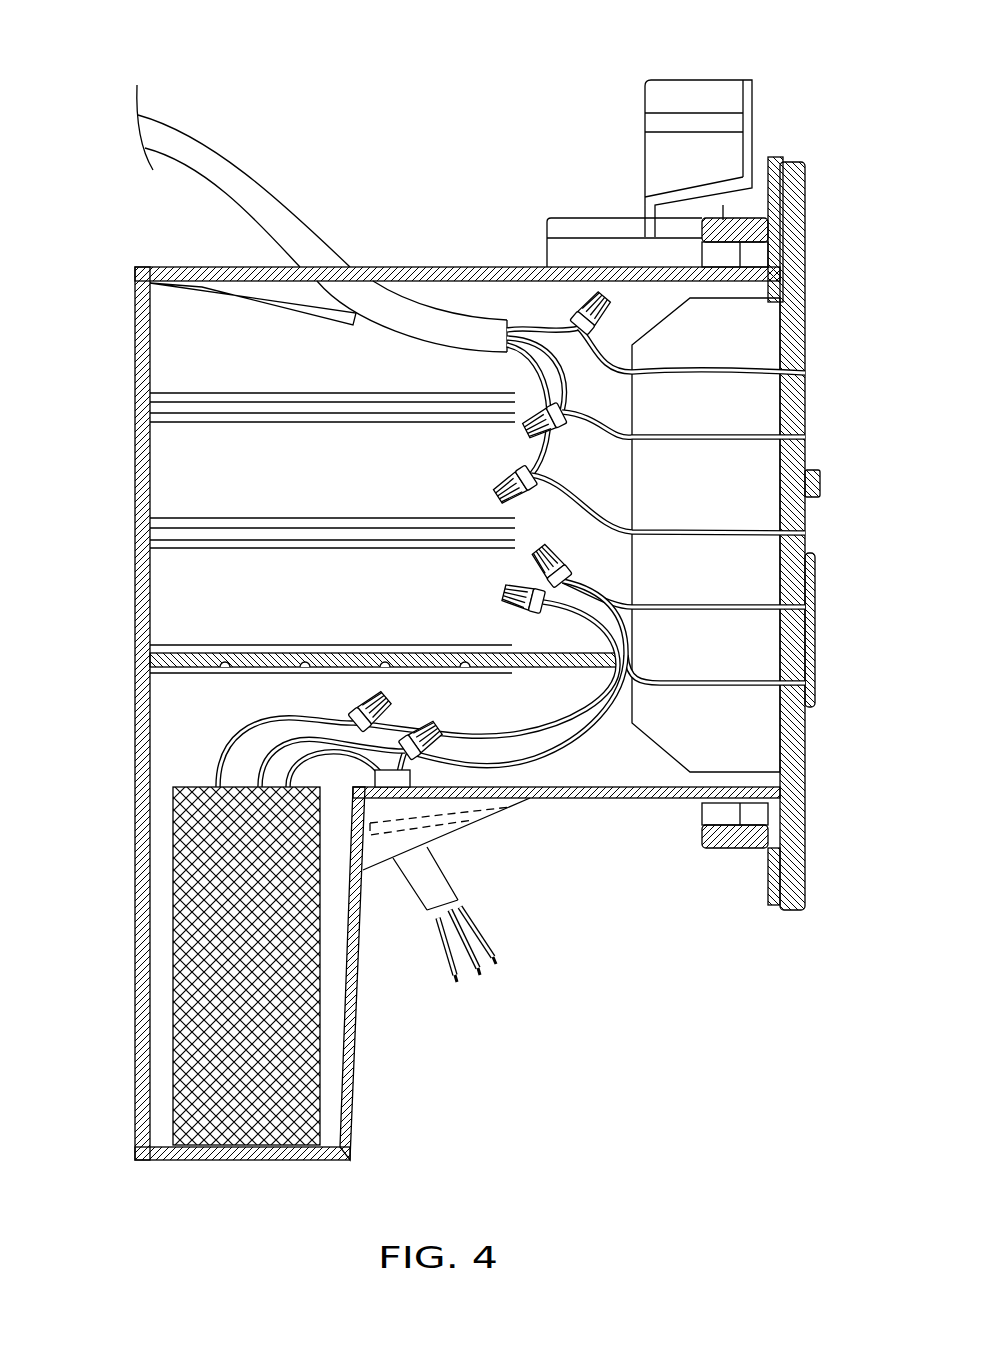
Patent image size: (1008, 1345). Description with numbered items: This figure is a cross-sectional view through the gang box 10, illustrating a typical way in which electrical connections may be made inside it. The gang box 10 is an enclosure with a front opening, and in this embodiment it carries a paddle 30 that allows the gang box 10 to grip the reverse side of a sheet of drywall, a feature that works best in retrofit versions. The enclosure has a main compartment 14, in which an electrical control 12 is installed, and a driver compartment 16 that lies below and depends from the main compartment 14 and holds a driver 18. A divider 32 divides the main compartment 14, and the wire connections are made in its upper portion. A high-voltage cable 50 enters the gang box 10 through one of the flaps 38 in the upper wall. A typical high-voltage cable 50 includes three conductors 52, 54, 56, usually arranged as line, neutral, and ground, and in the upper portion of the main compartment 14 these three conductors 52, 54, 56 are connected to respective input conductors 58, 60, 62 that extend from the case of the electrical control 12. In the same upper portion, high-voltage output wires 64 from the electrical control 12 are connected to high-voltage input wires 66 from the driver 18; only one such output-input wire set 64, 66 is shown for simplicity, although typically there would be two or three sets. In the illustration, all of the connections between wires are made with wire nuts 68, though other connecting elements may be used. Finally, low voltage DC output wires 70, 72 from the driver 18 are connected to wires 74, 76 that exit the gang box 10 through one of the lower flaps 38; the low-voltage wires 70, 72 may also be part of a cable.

The gang box 10 is at (450, 182).
The electrical control 12 is at (765, 342).
The main compartment 14 is at (178, 463).
The driver compartment 16 is at (178, 746).
The driver 18 is at (200, 936).
The paddle 30 is at (697, 97).
The divider 32 is at (586, 688).
The flaps 38 is at (240, 292).
The high-voltage cable 50 is at (228, 163).
The conductor 52 is at (543, 322).
The conductor 54 is at (512, 328).
The conductor 56 is at (533, 452).
The input conductor 58 is at (805, 533).
The input conductor 60 is at (805, 437).
The input conductor 62 is at (805, 373).
The high-voltage output wires 64 is at (805, 607).
The high-voltage input wires 66 is at (805, 683).
The wire nuts 68 is at (583, 300).
The low voltage DC output wire 70 is at (220, 735).
The low voltage DC output wire 72 is at (218, 768).
The wire 74 is at (445, 940).
The wire 76 is at (485, 932).